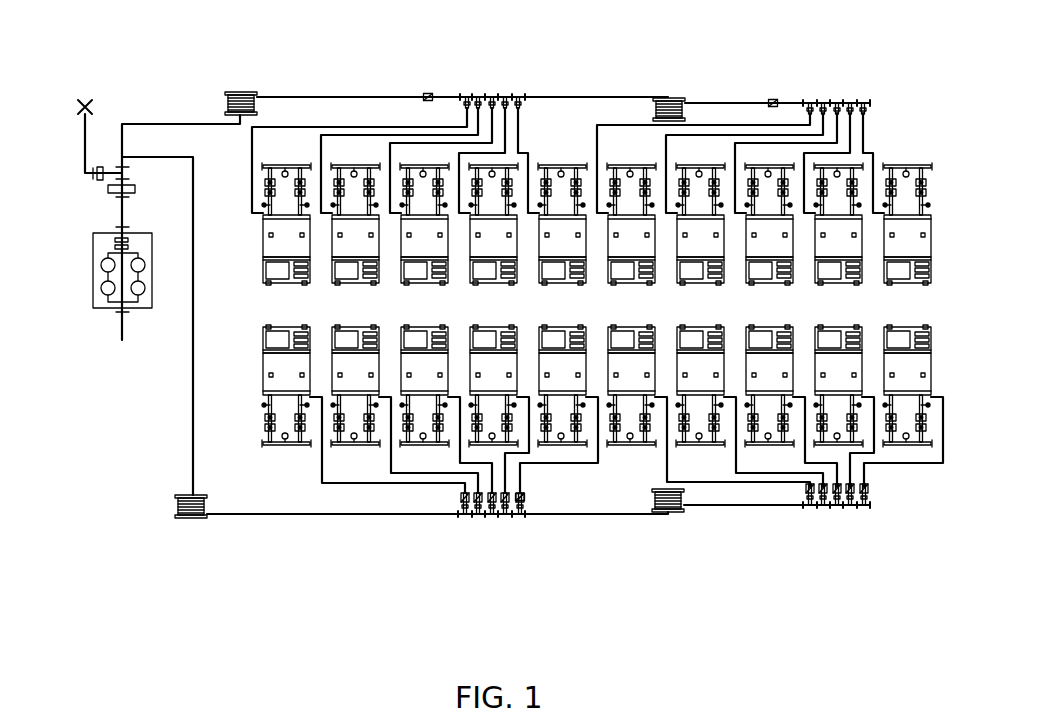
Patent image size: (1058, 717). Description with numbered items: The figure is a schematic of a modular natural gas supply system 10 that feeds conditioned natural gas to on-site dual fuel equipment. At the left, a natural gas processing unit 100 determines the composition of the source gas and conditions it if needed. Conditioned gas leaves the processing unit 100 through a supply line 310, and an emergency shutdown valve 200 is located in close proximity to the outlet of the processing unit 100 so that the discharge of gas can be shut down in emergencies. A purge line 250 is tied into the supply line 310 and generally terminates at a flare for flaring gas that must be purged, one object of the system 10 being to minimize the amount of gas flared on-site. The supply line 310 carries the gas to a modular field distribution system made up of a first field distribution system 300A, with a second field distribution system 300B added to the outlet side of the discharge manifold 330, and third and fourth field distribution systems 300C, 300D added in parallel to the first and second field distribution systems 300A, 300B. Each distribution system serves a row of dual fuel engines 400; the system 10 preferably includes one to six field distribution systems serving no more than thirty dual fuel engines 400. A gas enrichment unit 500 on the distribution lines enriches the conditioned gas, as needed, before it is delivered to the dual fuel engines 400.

The natural gas supply system 10 is at (650, 66).
The natural gas processing unit 100 is at (93, 246).
The emergency shutdown valve 200 is at (108, 190).
The purge line 250 is at (85, 150).
The first field distribution system 300A is at (288, 516).
The second field distribution system 300B is at (738, 513).
The third field distribution system 300C is at (356, 95).
The fourth field distribution system 300D is at (578, 96).
The supply line 310 is at (124, 197).
The discharge manifold 330 is at (482, 516).
The dual fuel engine 400 is at (357, 327).
The gas enrichment unit 500 is at (432, 95).